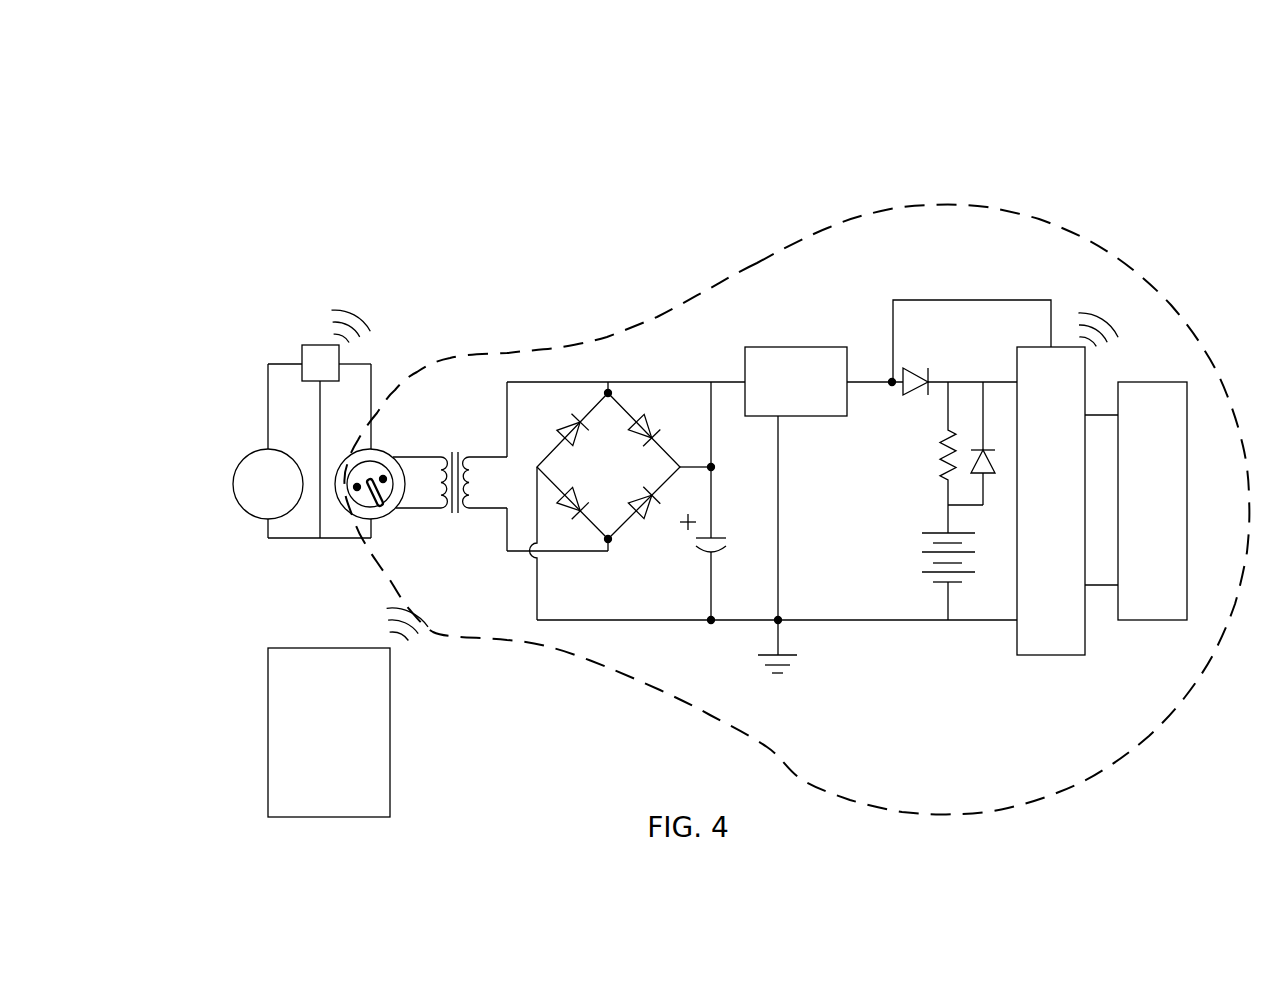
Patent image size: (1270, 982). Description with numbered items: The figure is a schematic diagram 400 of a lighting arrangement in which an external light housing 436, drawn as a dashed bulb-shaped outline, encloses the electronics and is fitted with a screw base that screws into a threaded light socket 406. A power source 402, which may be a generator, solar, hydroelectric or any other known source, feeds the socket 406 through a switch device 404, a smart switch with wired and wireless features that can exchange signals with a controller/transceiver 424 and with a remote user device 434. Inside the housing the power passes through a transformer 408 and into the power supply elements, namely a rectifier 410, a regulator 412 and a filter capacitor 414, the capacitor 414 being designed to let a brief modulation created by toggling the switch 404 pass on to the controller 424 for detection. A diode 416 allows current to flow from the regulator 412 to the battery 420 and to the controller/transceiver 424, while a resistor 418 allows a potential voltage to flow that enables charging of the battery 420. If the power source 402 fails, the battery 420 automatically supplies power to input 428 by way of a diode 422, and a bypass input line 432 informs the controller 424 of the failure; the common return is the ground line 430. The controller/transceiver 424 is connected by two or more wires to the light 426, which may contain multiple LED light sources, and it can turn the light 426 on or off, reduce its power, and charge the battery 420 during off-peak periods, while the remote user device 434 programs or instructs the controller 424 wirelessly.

The schematic diagram 400 is at (258, 101).
The power source 402 is at (243, 509).
The switch device 404 is at (327, 368).
The threaded light socket 406 is at (376, 466).
The transformer 408 is at (451, 508).
The power supply element 410 is at (611, 501).
The regulator 412 is at (727, 510).
The filter capacitor 414 is at (717, 540).
The diode 416 is at (891, 381).
The resistor 418 is at (943, 451).
The battery 420 is at (926, 530).
The diode 422 is at (978, 448).
The controller/transceiver 424 is at (1067, 484).
The light 426 is at (1136, 501).
The input 428 is at (1001, 382).
The ground line 430 is at (972, 620).
The bypass input line 432 is at (927, 300).
The remote user device 434 is at (377, 778).
The external light housing 436 is at (765, 260).